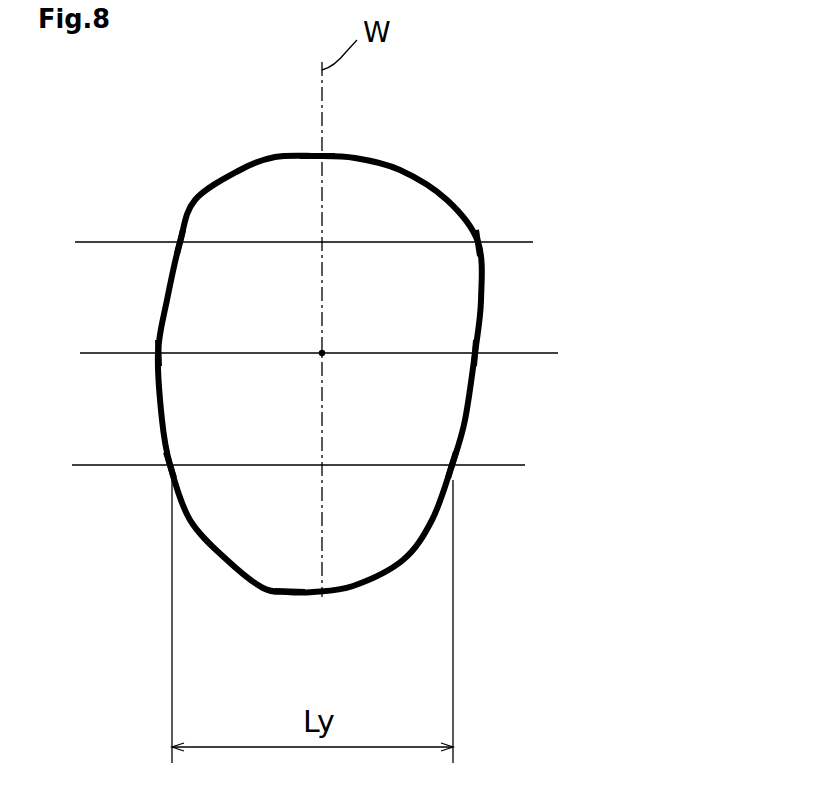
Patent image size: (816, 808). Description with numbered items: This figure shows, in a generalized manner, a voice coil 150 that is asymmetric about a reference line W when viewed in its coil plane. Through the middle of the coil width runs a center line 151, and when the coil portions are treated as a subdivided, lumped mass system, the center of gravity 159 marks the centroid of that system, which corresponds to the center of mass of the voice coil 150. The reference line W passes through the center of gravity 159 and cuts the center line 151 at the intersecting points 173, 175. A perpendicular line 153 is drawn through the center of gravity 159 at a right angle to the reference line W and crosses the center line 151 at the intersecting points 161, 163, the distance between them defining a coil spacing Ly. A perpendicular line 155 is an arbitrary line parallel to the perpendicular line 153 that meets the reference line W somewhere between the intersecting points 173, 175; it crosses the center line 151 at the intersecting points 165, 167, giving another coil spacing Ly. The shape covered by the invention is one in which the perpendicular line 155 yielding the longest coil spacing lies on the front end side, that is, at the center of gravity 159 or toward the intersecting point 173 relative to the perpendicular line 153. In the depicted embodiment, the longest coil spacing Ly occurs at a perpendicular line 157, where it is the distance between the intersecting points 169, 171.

The voice coil 150 is at (361, 335).
The center line 151 is at (378, 156).
The perpendicular line 153 is at (548, 355).
The perpendicular line 155 is at (517, 466).
The perpendicular line 157 is at (517, 241).
The center of gravity 159 is at (322, 350).
The intersecting point 161 is at (156, 357).
The intersecting point 163 is at (478, 355).
The intersecting point 165 is at (167, 470).
The intersecting point 167 is at (452, 478).
The intersecting point 169 is at (180, 240).
The intersecting point 171 is at (486, 250).
The intersecting point 173 is at (318, 152).
The intersecting point 175 is at (330, 597).